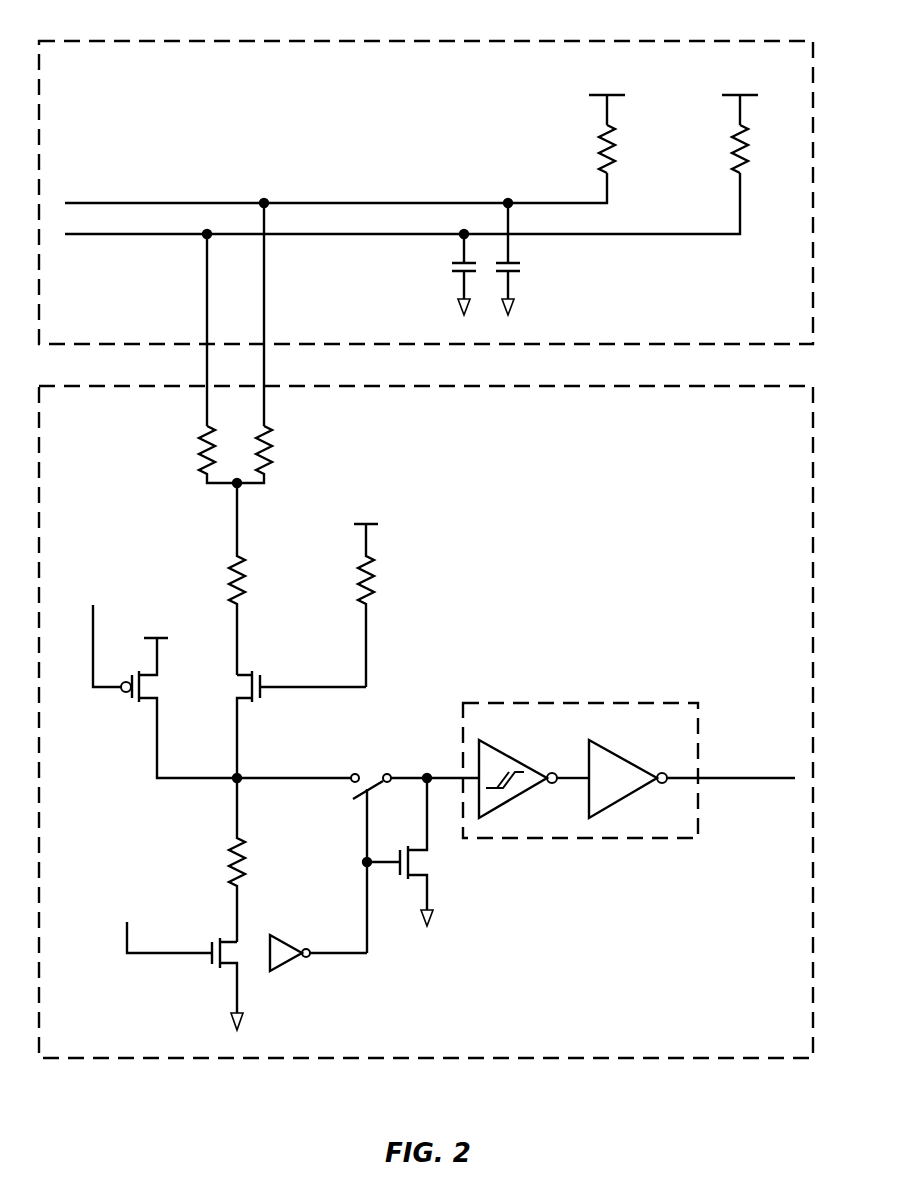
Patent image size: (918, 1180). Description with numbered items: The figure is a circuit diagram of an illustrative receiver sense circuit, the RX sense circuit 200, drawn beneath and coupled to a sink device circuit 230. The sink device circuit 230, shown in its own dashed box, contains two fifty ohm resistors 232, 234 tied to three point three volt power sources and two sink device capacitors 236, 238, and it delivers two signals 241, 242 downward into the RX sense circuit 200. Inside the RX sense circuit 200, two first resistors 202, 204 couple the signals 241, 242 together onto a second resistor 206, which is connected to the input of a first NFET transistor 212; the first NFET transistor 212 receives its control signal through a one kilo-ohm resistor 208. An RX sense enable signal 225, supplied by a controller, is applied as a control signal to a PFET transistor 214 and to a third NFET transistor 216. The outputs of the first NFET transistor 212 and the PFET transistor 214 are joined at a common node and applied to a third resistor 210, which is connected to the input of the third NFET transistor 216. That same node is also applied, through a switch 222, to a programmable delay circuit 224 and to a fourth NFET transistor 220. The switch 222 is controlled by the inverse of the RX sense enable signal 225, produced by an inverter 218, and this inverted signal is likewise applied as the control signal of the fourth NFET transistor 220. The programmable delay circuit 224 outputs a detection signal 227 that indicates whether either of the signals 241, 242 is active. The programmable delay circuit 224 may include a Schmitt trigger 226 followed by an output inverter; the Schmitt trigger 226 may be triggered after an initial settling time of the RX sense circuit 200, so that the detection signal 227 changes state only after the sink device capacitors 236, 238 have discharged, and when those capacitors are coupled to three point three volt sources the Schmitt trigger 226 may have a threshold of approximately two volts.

The RX sense circuit 200 is at (682, 1058).
The resistor R1 202 is at (203, 461).
The resistor R1 204 is at (268, 461).
The resistor R2 206 is at (231, 585).
The 1 kΩ resistor 208 is at (360, 585).
The resistor R3 210 is at (230, 846).
The NFET transistor M1 212 is at (247, 705).
The PFET transistor M2 214 is at (142, 705).
The NFET transistor M3 216 is at (222, 970).
The inverter 218 is at (288, 968).
The NFET transistor M4 220 is at (423, 848).
The switch S1 222 is at (360, 796).
The programmable delay circuit 224 is at (576, 703).
The RX sense enable signal 225 is at (93, 617).
The Schmitt trigger 226 is at (512, 804).
The detection signal 227 is at (754, 781).
The sink device circuit 230 is at (462, 41).
The 50 ohm resistor 232 is at (614, 139).
The 50 ohm resistor 234 is at (747, 139).
The sink device capacitor 236 is at (453, 274).
The sink device capacitor 238 is at (519, 274).
The signal 241 is at (206, 372).
The signal 242 is at (264, 372).